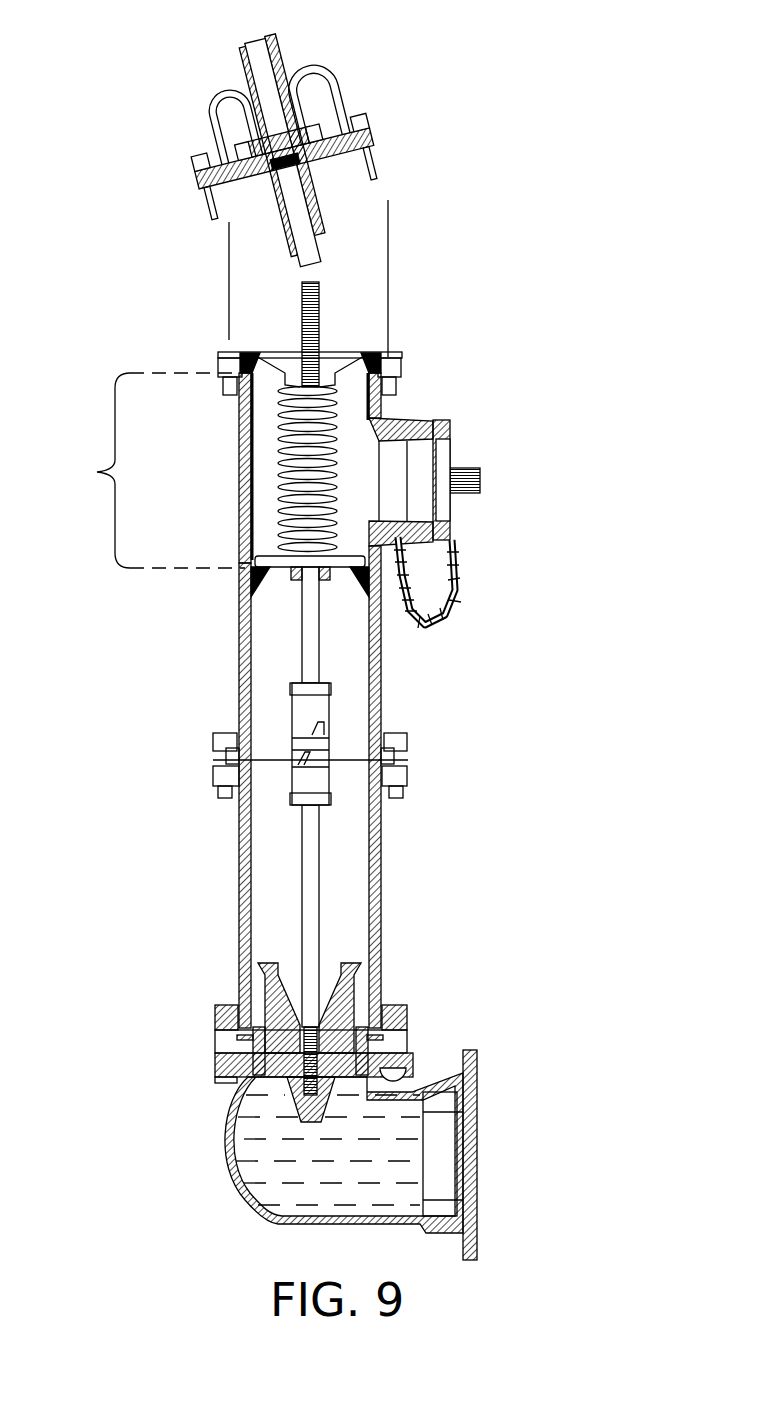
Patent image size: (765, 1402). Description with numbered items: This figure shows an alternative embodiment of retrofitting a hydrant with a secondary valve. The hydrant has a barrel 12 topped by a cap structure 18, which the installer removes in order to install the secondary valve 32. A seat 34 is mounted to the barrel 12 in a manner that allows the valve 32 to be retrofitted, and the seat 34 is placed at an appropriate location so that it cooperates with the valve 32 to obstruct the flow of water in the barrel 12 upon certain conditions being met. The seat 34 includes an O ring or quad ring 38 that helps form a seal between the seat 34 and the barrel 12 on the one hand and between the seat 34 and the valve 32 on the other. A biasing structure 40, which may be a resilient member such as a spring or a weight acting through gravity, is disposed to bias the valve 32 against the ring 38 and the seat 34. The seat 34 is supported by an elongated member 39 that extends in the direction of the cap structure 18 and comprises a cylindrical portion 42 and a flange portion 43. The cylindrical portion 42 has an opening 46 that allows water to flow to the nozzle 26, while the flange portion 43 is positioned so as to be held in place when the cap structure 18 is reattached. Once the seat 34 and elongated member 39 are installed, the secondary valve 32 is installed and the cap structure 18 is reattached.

The barrel 12 is at (240, 705).
The cap structure 18 is at (320, 78).
The nozzle 26 is at (445, 522).
The secondary valve 32 is at (366, 518).
The seat 34 is at (250, 573).
The O ring or quad ring 38 is at (250, 567).
The elongated member 39 is at (152, 470).
The biasing structure 40 is at (285, 491).
The cylindrical portion 42 is at (240, 424).
The flange portion 43 is at (240, 352).
The opening 46 is at (381, 417).